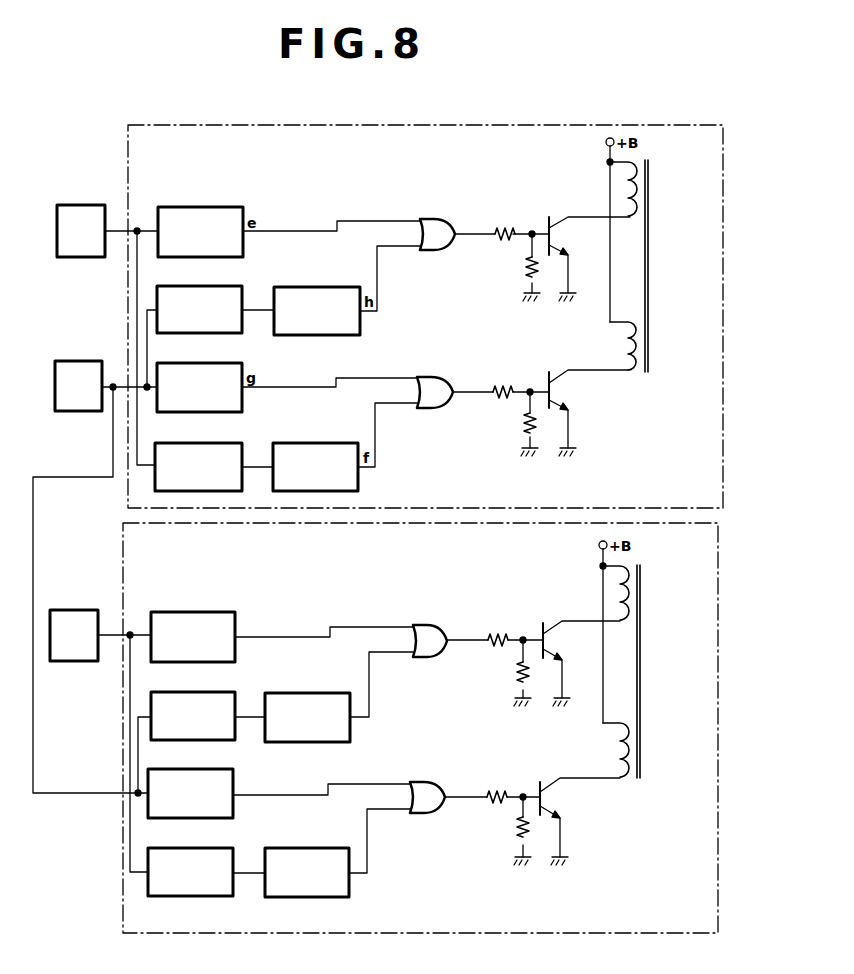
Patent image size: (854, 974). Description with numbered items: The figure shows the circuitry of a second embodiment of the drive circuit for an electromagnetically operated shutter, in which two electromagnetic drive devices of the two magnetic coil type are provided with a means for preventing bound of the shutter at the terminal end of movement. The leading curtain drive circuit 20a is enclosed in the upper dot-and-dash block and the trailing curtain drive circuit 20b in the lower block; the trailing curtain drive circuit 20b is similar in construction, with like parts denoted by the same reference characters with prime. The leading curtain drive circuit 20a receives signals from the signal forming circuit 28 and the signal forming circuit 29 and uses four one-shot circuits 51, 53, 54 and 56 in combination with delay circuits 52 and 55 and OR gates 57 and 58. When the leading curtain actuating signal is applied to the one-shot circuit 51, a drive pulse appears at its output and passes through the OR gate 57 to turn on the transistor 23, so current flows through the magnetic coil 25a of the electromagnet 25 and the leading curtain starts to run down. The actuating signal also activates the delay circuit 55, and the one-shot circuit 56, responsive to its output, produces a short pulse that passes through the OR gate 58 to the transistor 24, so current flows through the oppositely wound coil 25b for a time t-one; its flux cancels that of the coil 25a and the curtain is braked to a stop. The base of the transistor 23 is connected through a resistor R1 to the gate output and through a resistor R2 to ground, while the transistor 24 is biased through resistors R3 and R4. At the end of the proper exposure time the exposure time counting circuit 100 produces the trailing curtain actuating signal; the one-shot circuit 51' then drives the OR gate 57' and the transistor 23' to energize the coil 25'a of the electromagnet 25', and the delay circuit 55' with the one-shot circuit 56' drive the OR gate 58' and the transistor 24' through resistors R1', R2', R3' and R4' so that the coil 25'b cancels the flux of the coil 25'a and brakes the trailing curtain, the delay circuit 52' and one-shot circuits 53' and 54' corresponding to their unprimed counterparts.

The leading curtain drive circuit 20a is at (724, 137).
The trailing curtain drive circuit 20b is at (719, 537).
The signal forming circuit 28 is at (81, 231).
The signal forming circuit 29 is at (78, 386).
The exposure time counting circuit 100 is at (74, 635).
The one-shot circuit 51 is at (200, 232).
The delay circuit 52 is at (199, 309).
The one-shot circuit 53 is at (317, 311).
The one-shot circuit 54 is at (199, 387).
The delay circuit 55 is at (198, 467).
The one-shot circuit 56 is at (315, 467).
The OR gate 57 is at (447, 222).
The OR gate 58 is at (445, 380).
The drive transistor 23 is at (589, 240).
The drive transistor 24 is at (587, 396).
The electromagnet 25 is at (663, 266).
The magnetic coil 25a is at (630, 222).
The magnetic coil 25b is at (628, 375).
The resistor R1 is at (506, 222).
The resistor R2 is at (521, 267).
The resistor R3 is at (503, 381).
The resistor R4 is at (520, 424).
The one-shot circuit 51' is at (193, 637).
The delay circuit 52' is at (193, 716).
The one-shot circuit 53' is at (307, 717).
The one-shot circuit 54' is at (190, 793).
The delay circuit 55' is at (190, 872).
The one-shot circuit 56' is at (307, 872).
The OR gate 57' is at (443, 628).
The OR gate 58' is at (441, 784).
The drive transistor 23' is at (581, 645).
The drive transistor 24' is at (579, 804).
The electromagnet 25' is at (662, 671).
The magnetic coil 25'a is at (626, 612).
The magnetic coil 25'b is at (627, 769).
The resistor R1' is at (502, 628).
The resistor R2' is at (512, 673).
The resistor R3' is at (500, 785).
The resistor R4' is at (512, 831).